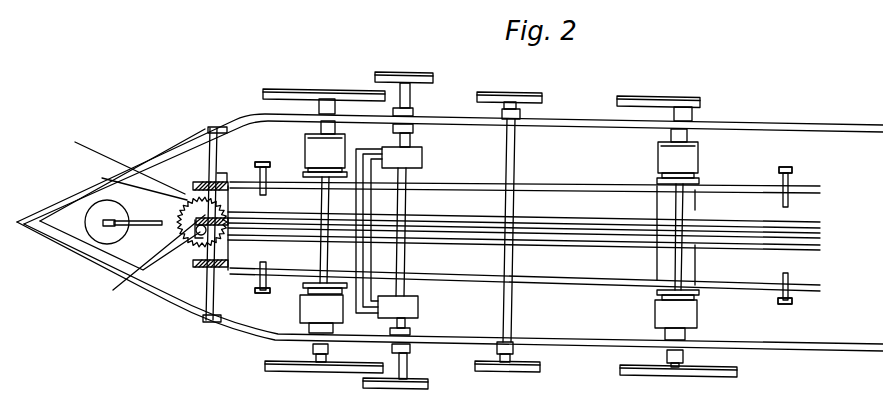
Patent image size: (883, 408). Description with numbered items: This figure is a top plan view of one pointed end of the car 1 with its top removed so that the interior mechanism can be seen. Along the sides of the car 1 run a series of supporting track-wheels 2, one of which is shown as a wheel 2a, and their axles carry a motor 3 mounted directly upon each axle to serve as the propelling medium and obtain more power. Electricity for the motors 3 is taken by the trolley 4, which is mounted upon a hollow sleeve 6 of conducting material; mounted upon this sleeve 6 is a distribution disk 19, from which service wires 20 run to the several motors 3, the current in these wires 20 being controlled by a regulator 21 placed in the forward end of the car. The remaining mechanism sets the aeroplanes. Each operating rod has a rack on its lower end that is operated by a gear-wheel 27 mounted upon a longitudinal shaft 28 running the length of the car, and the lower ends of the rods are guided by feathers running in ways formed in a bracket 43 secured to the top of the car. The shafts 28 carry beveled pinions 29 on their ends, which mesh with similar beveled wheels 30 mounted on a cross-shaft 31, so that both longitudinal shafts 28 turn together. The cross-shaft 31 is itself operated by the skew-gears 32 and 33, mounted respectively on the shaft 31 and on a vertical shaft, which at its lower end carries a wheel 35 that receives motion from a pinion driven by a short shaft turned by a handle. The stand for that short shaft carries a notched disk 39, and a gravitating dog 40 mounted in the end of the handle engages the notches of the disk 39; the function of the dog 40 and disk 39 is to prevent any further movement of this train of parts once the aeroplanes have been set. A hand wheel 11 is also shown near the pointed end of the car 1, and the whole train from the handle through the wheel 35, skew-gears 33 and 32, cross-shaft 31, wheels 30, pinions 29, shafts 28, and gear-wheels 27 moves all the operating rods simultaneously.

The car 1 is at (578, 283).
The supporting track-wheels 2 is at (293, 90).
The rail 2a is at (510, 92).
The motor 3 is at (317, 153).
The trolley 4 is at (393, 73).
The hollow sleeve 6 is at (410, 103).
The hand wheel 11 is at (123, 219).
The distribution disk 19 is at (422, 158).
The service wires 20 is at (524, 235).
The regulator 21 is at (198, 233).
The gear-wheel 27 is at (292, 198).
The longitudinal shaft 28 is at (553, 184).
The beveled pinion 29 is at (250, 302).
The beveled wheel 30 is at (193, 182).
The cross-shaft 31 is at (220, 312).
The skew-gear 32 is at (122, 210).
The skew-gear 33 is at (148, 268).
The wheel 35 is at (118, 177).
The notched disk 39 is at (188, 188).
The gravitating dog 40 is at (104, 158).
The bracket 43 is at (787, 171).